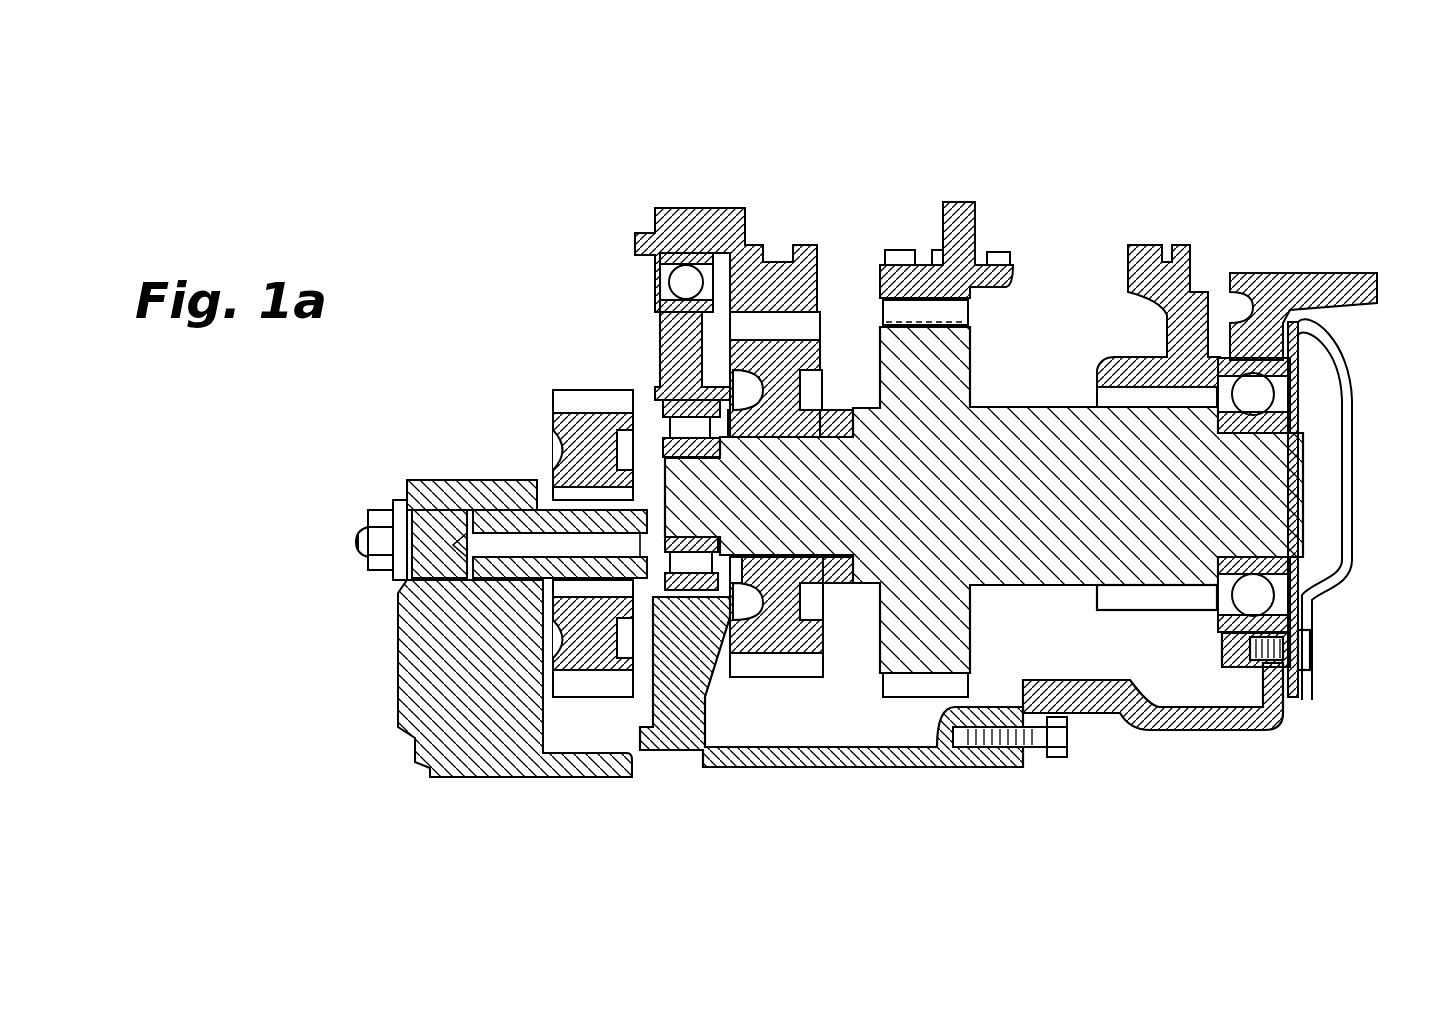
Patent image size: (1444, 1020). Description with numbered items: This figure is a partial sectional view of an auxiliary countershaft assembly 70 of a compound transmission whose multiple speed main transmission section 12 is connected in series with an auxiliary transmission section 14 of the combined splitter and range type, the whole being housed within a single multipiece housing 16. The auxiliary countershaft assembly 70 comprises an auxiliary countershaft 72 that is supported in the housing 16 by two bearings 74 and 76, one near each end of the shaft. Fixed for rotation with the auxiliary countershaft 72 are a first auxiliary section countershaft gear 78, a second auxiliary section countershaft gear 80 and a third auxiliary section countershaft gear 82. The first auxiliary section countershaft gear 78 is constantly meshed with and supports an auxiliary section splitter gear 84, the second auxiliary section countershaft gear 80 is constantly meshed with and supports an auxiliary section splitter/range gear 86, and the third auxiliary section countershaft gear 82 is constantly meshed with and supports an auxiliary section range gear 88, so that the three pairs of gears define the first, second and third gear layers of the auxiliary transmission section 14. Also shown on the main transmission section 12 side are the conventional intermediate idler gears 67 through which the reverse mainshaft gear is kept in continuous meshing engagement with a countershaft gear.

The main transmission section 12 is at (625, 128).
The auxiliary transmission section 14 is at (1385, 128).
The housing 16 is at (398, 652).
The intermediate idler gears 67 is at (598, 665).
The auxiliary countershaft assembly 70 is at (1010, 308).
The auxiliary countershaft 72 is at (1040, 570).
The bearing 74 is at (695, 430).
The bearing 76 is at (1295, 405).
The first auxiliary section countershaft gear 78 is at (773, 655).
The second auxiliary section countershaft gear 80 is at (905, 690).
The third auxiliary section countershaft gear 82 is at (1163, 590).
The auxiliary section splitter gear 84 is at (823, 262).
The auxiliary section splitter/range gear 86 is at (870, 282).
The auxiliary section range gear 88 is at (1200, 272).